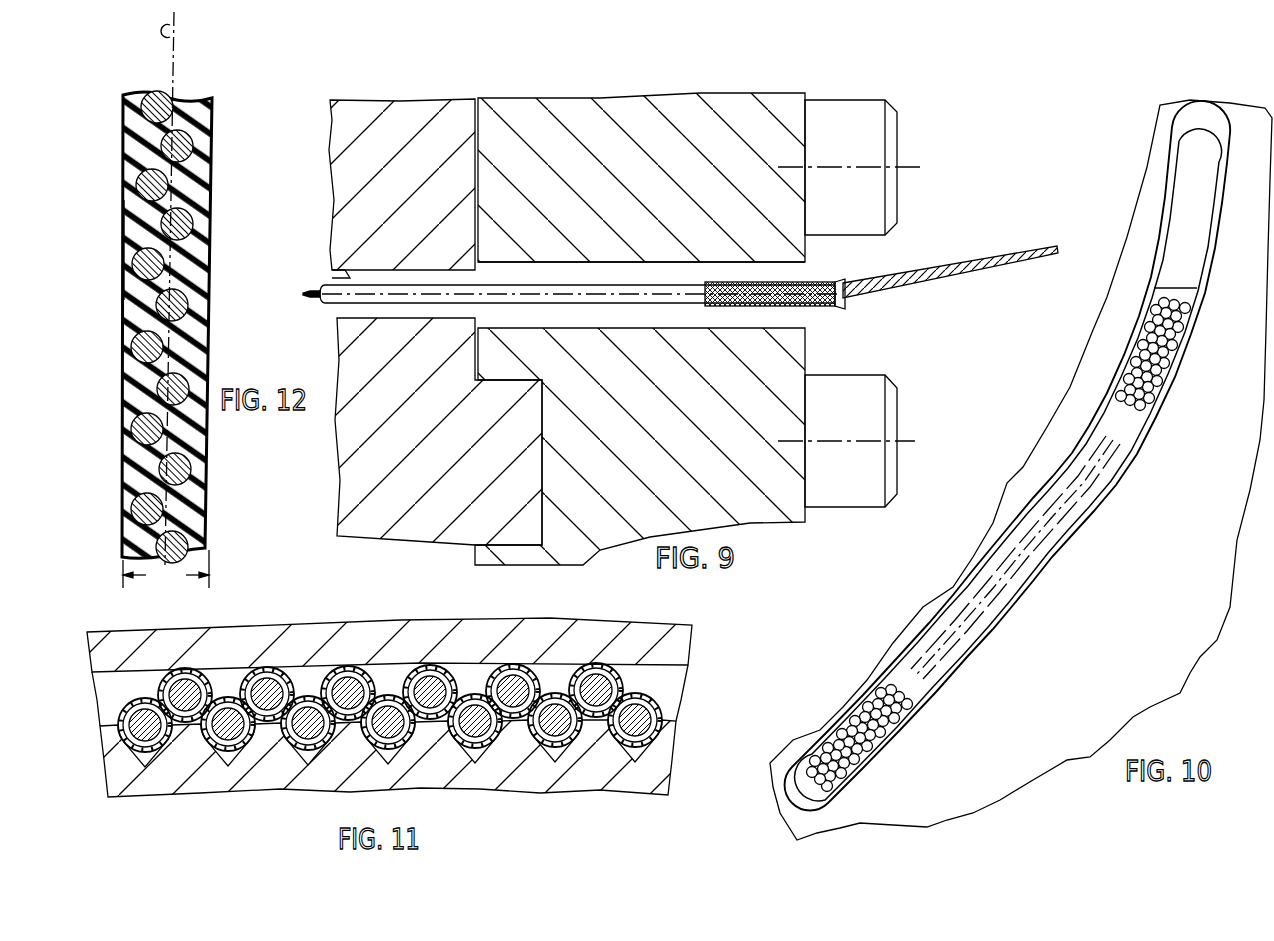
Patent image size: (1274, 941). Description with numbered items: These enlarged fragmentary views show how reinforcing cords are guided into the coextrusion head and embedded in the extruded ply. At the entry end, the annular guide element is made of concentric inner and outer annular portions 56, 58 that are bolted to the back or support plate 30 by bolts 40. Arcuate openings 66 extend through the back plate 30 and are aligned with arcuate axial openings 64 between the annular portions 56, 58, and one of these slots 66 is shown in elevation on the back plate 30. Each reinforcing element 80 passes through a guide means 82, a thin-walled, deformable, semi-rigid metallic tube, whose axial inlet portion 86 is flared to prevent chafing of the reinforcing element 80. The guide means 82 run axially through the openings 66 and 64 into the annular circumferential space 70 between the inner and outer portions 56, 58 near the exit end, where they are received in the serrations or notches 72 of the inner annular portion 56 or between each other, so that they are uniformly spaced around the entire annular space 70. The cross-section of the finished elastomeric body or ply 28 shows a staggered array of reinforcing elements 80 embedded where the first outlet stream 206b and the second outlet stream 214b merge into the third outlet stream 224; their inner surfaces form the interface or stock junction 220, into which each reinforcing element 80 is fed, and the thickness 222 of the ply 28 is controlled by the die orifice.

In FIG. 12, the elastomeric body or ply 28 is at (208, 238).
In FIG. 9, the back or support plate 30 is at (664, 197).
In FIG. 10, the back or support plate 30 is at (1087, 380).
In FIG. 9, the bolts 40 is at (898, 146).
In FIG. 9, the inner annular portion 56 is at (428, 442).
In FIG. 11, the inner annular portion 56 is at (278, 776).
In FIG. 9, the outer annular portion 58 is at (410, 197).
In FIG. 11, the outer annular portion 58 is at (315, 632).
In FIG. 9, the arcuate axial openings 64 is at (343, 280).
In FIG. 9, the arcuate openings 66 is at (788, 277).
In FIG. 10, the arcuate openings 66 is at (1165, 205).
In FIG. 11, the annular circumferential space 70 is at (668, 687).
In FIG. 11, the serrations or notches 72 is at (555, 752).
In FIG. 9, the reinforcing elements 80 is at (975, 258).
In FIG. 10, the reinforcing elements 80 is at (1008, 465).
In FIG. 11, the reinforcing elements 80 is at (227, 720).
In FIG. 12, the reinforcing elements 80 is at (168, 183).
In FIG. 9, the guide means 82 is at (826, 308).
In FIG. 10, the guide means 82 is at (1176, 302).
In FIG. 11, the guide means 82 is at (507, 668).
In FIG. 9, the guide means axial inlet portions 86 is at (840, 285).
In FIG. 12, the first annular tubular outlet stream 206b is at (200, 269).
In FIG. 12, the second annular tubular outlet stream 214b is at (132, 229).
In FIG. 12, the interface or stock junction 220 is at (170, 67).
In FIG. 12, the thickness 222 is at (166, 569).
In FIG. 12, the third outlet stream 224 is at (195, 357).